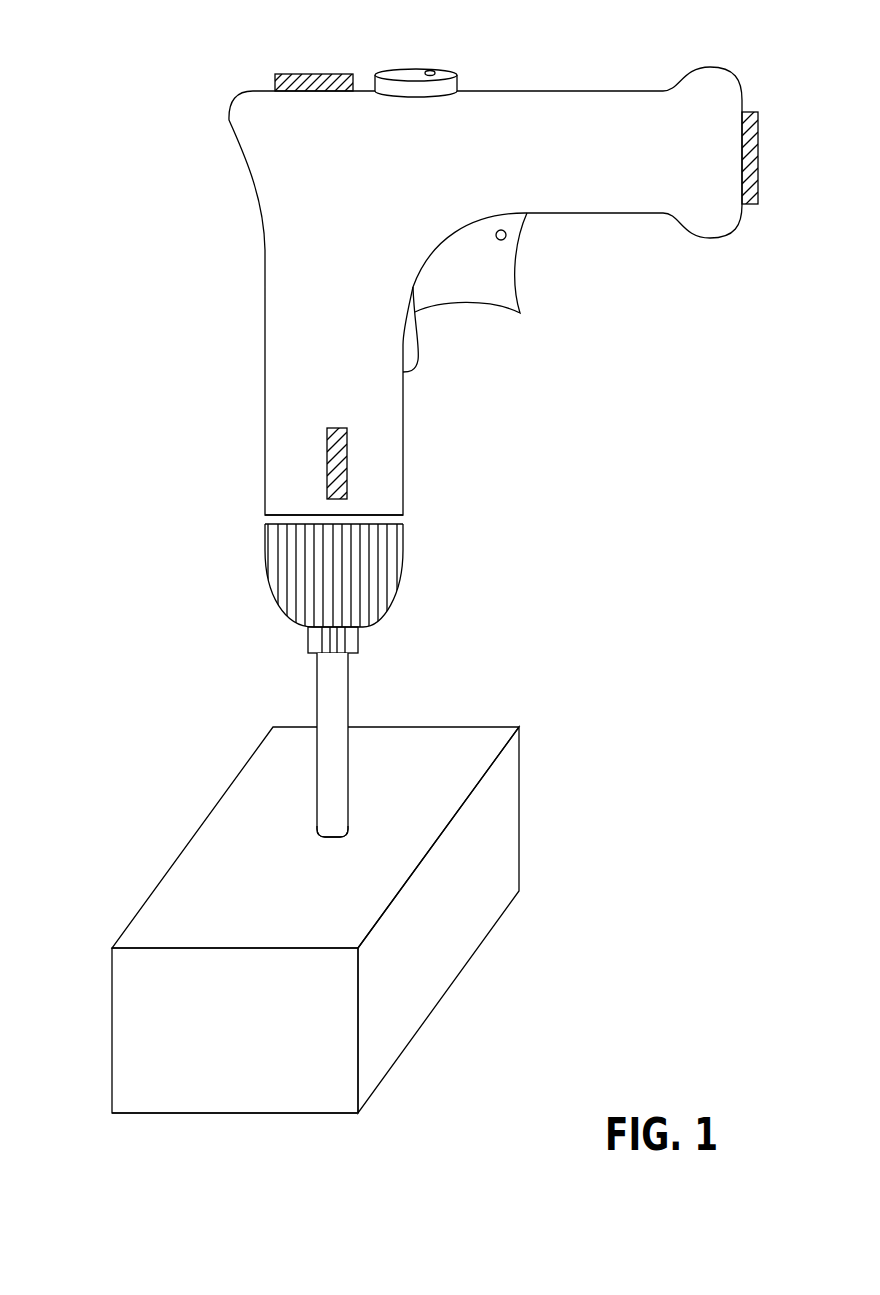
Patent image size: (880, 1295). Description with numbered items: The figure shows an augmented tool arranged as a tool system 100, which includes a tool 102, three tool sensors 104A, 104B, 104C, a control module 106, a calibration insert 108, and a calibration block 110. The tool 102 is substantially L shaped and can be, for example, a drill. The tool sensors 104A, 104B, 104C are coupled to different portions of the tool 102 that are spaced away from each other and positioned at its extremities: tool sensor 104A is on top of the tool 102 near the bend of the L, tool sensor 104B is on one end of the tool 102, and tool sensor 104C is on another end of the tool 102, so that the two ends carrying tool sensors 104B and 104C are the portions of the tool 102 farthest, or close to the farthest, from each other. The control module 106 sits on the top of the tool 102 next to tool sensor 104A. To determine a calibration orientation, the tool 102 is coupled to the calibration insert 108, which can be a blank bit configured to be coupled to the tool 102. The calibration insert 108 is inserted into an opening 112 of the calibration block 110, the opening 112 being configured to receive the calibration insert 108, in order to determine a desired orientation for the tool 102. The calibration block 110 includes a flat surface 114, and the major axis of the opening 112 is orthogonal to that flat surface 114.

The tool system 100 is at (152, 50).
The tool 102 is at (395, 428).
The tool sensor 104A is at (327, 74).
The tool sensor 104B is at (758, 160).
The tool sensor 104C is at (327, 463).
The control module 106 is at (455, 70).
The calibration insert 108 is at (339, 692).
The calibration block 110 is at (507, 850).
The opening 112 is at (322, 838).
The flat surface 114 is at (280, 1113).